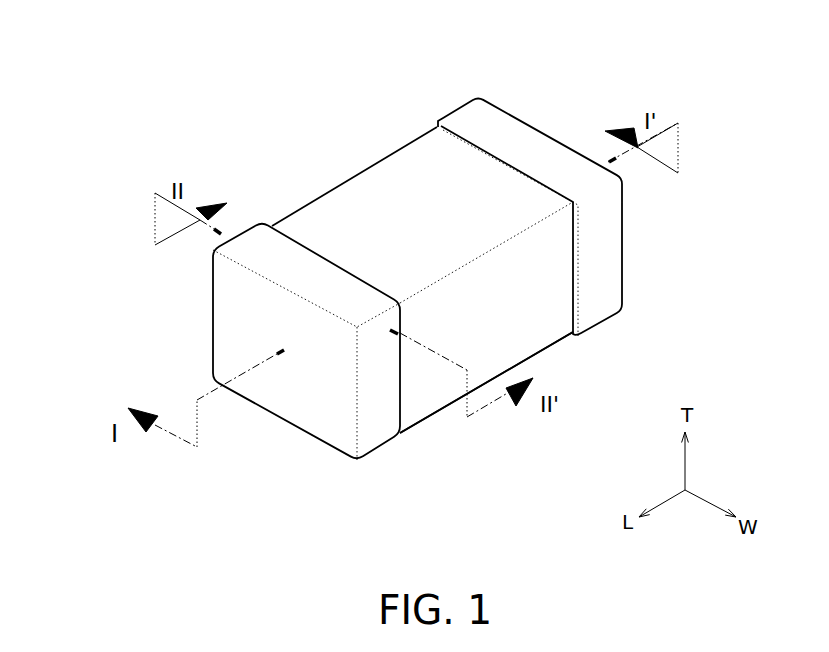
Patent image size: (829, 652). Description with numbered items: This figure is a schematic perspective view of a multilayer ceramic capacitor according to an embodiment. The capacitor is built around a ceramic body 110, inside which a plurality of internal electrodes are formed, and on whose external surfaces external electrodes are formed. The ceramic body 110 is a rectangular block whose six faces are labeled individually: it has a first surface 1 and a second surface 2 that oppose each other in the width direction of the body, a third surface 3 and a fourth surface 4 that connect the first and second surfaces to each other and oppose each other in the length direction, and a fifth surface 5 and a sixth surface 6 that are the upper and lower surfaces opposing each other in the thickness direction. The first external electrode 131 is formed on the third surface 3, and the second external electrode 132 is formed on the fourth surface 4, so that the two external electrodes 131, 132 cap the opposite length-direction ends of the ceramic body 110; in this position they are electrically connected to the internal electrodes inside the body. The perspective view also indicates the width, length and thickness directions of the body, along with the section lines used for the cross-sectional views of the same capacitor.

The first surface 1 is at (482, 285).
The second surface 2 is at (540, 295).
The third surface 3 is at (307, 402).
The fourth surface 4 is at (543, 118).
The fifth surface 5 is at (437, 182).
The sixth surface 6 is at (432, 410).
The ceramic body 110 is at (440, 271).
The first external electrode 131 is at (312, 396).
The second external electrode 132 is at (594, 169).